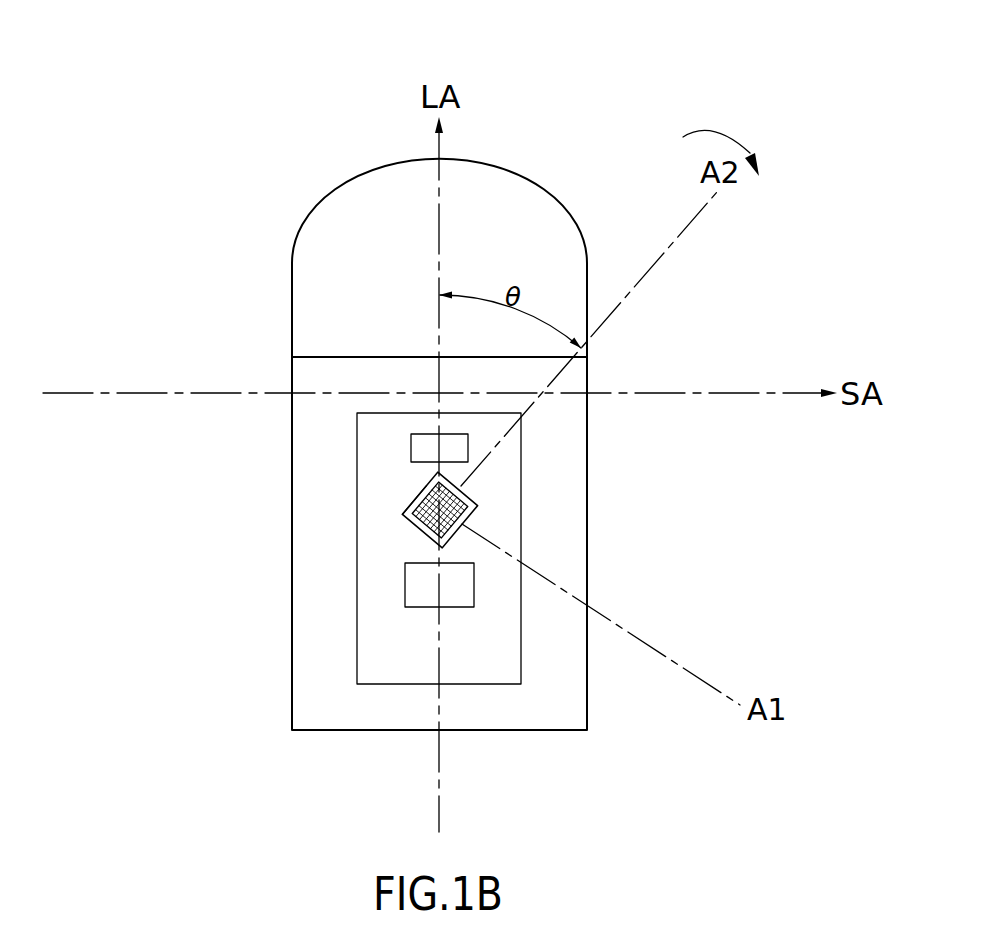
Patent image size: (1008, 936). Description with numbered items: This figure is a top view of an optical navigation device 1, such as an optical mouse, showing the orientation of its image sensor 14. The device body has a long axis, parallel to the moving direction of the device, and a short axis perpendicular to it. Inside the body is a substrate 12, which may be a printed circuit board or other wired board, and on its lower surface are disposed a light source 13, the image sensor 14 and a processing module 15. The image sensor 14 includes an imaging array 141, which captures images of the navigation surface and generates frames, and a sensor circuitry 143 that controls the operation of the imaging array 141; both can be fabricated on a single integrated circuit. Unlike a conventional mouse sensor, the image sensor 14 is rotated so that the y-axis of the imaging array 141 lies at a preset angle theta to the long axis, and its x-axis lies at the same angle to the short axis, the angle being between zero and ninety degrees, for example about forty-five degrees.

The optical navigation device 1 is at (182, 45).
The substrate 12 is at (490, 687).
The light source 13 is at (411, 446).
The image sensor 14 is at (467, 497).
The imaging array 141 is at (463, 509).
The sensor circuitry 143 is at (418, 524).
The processing module 15 is at (457, 592).